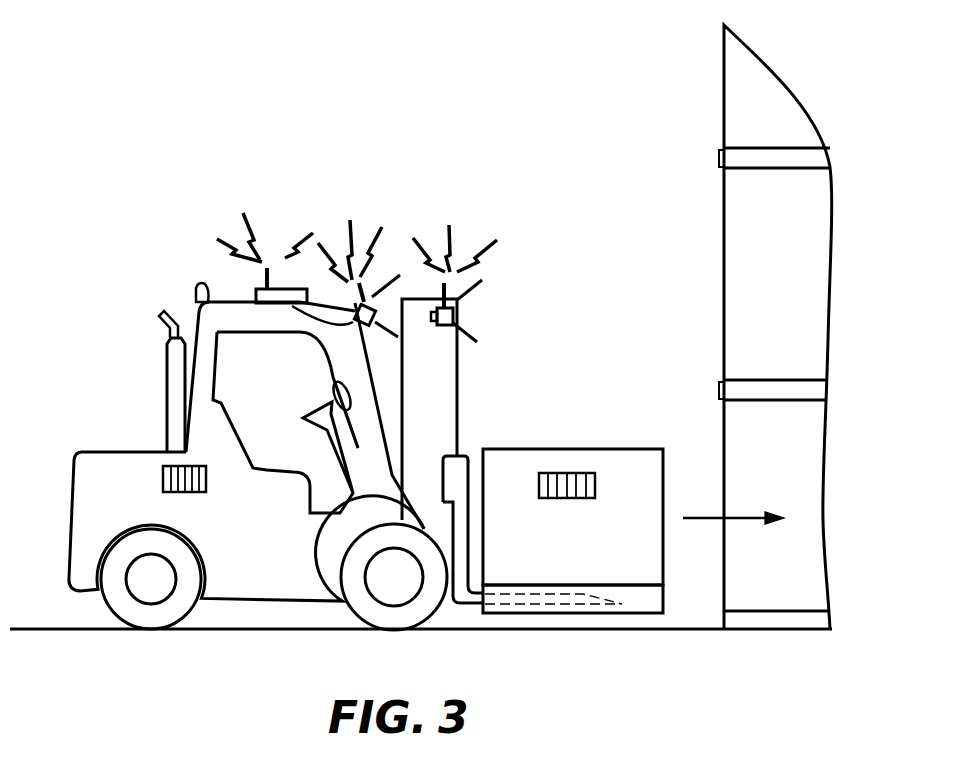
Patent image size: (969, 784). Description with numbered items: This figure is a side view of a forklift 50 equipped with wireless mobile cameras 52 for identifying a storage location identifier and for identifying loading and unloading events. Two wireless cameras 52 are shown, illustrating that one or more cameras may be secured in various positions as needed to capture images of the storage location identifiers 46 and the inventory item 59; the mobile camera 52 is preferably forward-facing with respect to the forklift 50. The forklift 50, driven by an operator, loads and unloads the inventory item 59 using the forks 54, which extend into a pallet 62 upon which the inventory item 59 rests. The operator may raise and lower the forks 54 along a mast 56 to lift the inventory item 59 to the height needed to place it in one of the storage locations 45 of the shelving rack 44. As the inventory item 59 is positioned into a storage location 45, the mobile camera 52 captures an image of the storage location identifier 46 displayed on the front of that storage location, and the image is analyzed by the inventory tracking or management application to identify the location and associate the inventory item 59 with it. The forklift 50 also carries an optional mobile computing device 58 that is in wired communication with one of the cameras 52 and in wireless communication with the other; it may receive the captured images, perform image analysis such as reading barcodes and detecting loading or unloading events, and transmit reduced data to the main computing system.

The shelving rack 44 is at (697, 71).
The storage location 45 is at (774, 124).
The storage location identifier 46 is at (718, 158).
The forklift 50 is at (156, 283).
The wireless mobile camera 52 is at (368, 300).
The forks 54 is at (533, 605).
The mast 56 is at (456, 394).
The mobile computing device 58 is at (278, 295).
The inventory item 59 is at (567, 448).
The pallet 62 is at (643, 585).